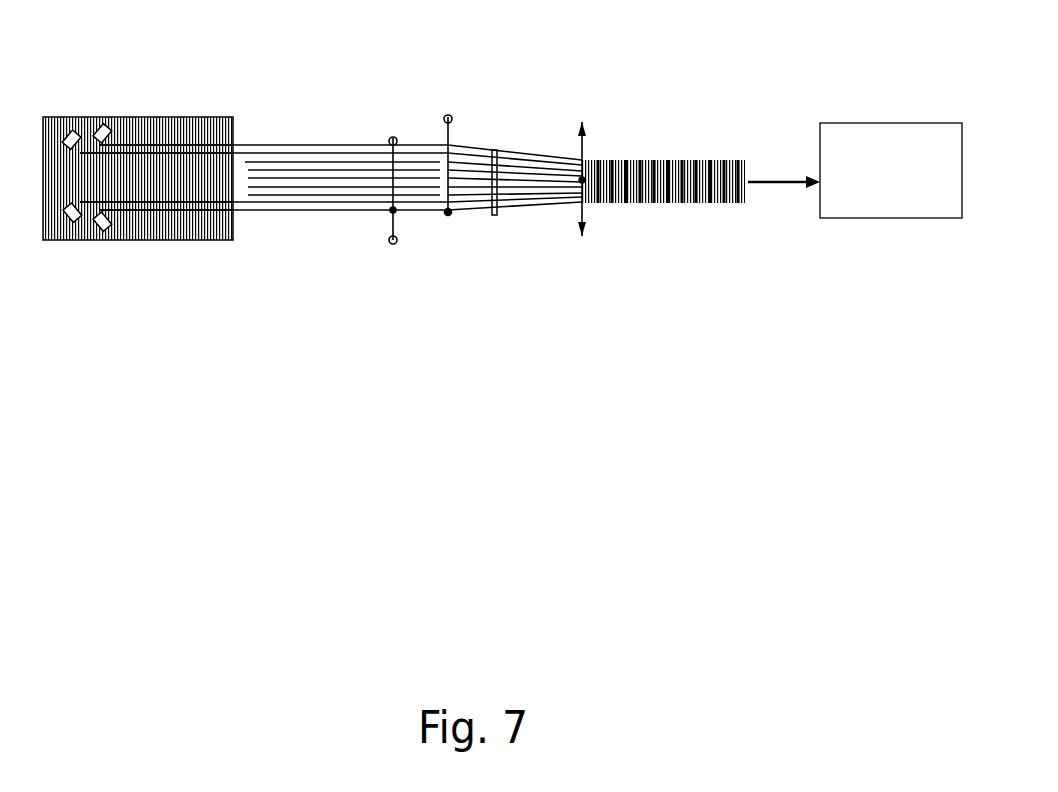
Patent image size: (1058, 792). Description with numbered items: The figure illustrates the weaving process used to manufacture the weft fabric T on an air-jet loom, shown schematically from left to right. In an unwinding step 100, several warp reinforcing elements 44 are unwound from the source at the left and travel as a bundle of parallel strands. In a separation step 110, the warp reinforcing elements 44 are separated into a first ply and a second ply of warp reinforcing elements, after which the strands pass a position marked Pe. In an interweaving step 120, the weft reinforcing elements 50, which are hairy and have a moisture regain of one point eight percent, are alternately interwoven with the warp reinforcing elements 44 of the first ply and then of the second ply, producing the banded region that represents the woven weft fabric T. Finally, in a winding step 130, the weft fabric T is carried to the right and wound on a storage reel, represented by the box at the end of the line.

The unwinding step 100 is at (130, 114).
The warp reinforcing elements 44 is at (302, 142).
The separation step 110 is at (448, 214).
The entrance pupil Pe is at (496, 152).
The interweaving step 120 is at (584, 179).
The weft reinforcing elements 50 is at (692, 205).
The weft fabric T is at (708, 145).
The winding step 130 is at (907, 237).